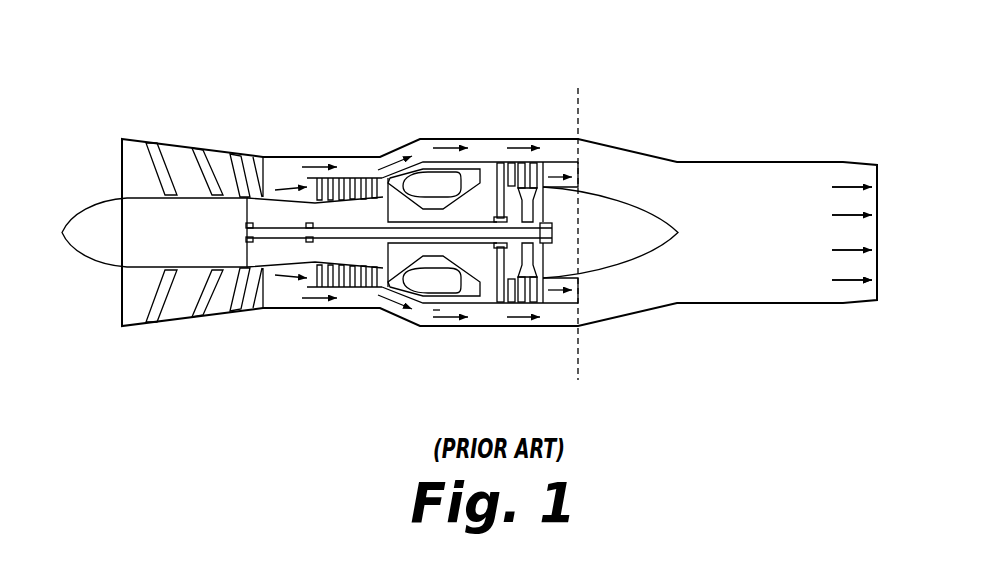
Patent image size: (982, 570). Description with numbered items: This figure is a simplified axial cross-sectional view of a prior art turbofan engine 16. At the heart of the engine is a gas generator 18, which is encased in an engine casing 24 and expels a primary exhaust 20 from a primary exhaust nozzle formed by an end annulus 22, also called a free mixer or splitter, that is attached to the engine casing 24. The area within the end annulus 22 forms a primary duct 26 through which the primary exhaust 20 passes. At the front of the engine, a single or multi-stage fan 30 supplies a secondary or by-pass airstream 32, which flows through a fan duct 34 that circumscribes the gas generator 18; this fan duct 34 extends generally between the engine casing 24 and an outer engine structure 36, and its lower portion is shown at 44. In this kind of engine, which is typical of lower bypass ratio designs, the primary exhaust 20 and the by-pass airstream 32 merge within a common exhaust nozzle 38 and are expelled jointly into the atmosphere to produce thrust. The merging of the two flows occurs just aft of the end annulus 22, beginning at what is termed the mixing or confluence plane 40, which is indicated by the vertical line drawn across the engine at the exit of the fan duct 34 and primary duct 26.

The turbofan engine 16 is at (545, 88).
The gas generator 18 is at (377, 291).
The primary exhaust 20 is at (556, 290).
The end annulus 22 is at (578, 308).
The engine casing 24 is at (430, 310).
The primary duct 26 is at (577, 183).
The fan 30 is at (209, 162).
The by-pass airstream 32 is at (315, 167).
The fan duct 34 is at (425, 150).
The outer engine structure 36 is at (492, 138).
The common exhaust nozzle 38 is at (770, 162).
The mixing plane 40 is at (583, 114).
The lower bypass duct 44 is at (483, 330).